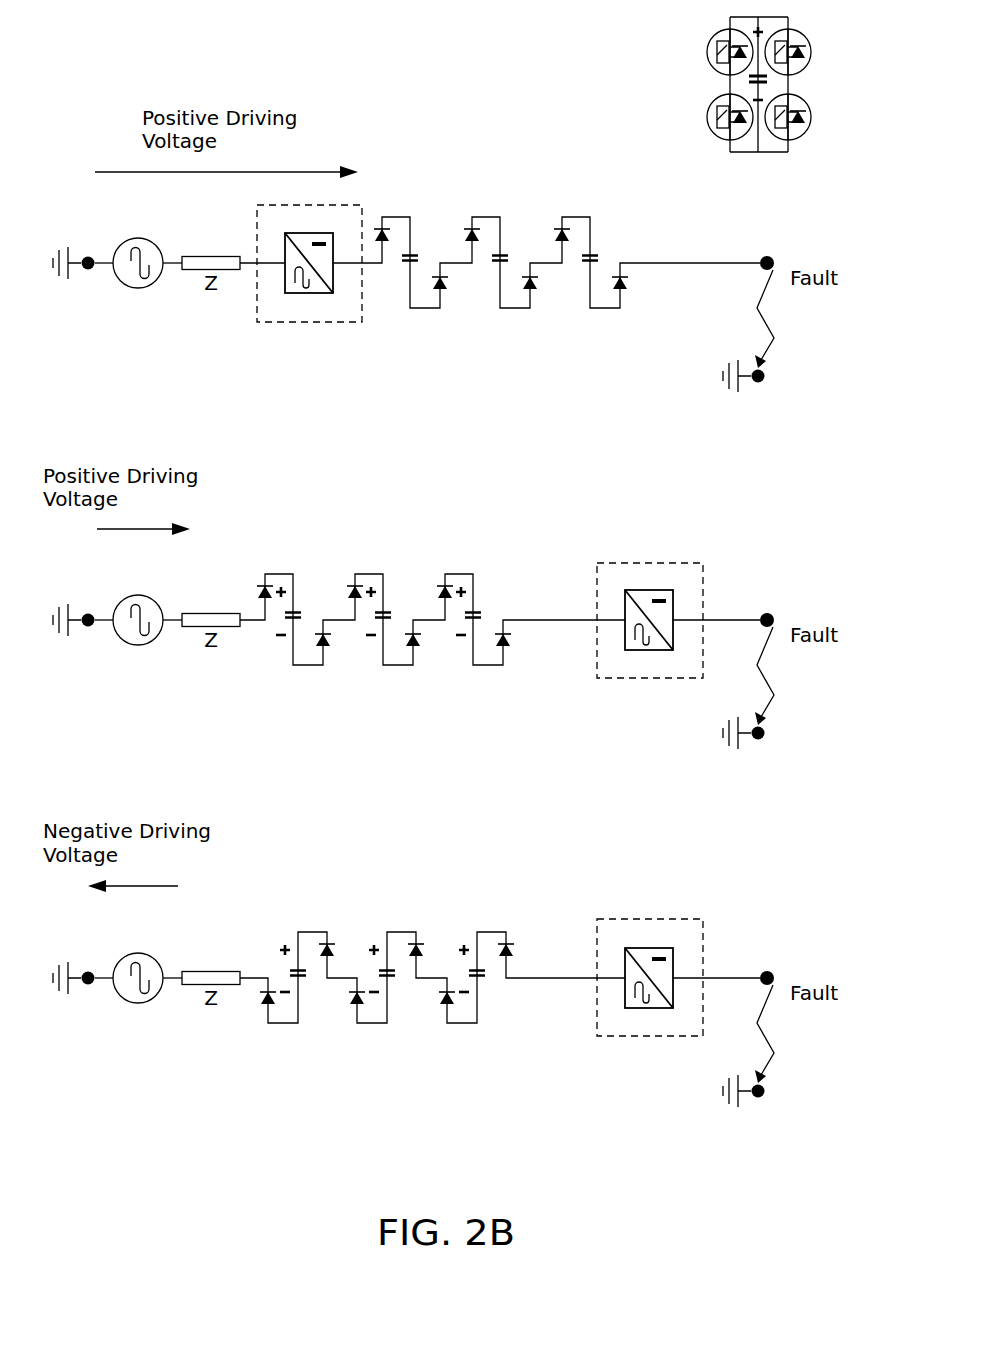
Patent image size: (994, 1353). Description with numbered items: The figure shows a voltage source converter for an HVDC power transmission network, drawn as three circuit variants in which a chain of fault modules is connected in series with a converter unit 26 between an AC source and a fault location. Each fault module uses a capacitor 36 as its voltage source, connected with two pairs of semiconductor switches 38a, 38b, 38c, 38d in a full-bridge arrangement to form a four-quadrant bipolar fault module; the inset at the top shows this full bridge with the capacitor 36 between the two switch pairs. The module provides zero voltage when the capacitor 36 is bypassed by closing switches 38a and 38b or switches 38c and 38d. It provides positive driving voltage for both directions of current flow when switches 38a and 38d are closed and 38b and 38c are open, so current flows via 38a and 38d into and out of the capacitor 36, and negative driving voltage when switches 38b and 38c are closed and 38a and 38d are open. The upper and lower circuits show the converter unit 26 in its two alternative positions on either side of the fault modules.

The converter unit 26 is at (303, 288).
The capacitor 36 is at (471, 971).
The semiconductor switch 38a is at (716, 34).
The semiconductor switch 38b is at (802, 34).
The semiconductor switch 38c is at (716, 135).
The semiconductor switch 38d is at (802, 135).